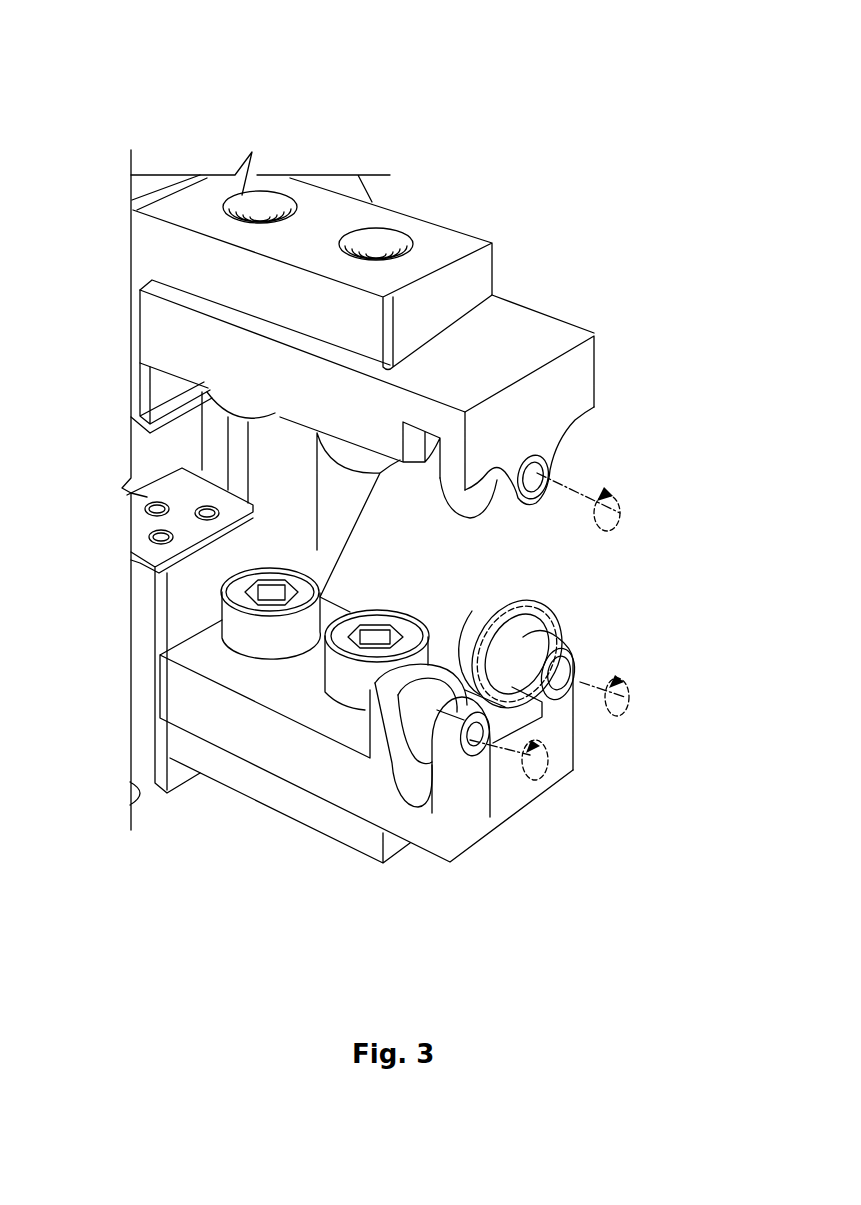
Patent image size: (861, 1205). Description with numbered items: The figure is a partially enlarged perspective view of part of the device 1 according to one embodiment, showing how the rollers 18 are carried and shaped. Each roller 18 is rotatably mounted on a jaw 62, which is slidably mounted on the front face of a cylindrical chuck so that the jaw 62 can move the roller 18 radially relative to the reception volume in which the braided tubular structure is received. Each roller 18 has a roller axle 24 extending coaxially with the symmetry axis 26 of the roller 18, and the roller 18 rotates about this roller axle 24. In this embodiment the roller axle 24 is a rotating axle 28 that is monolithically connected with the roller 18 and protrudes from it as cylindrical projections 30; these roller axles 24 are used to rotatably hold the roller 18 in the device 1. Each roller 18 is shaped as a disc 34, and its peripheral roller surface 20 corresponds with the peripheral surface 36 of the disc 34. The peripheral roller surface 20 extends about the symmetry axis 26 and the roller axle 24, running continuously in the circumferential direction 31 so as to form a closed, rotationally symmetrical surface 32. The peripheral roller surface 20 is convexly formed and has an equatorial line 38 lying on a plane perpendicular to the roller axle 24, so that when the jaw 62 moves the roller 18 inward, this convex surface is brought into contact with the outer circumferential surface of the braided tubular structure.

The device 1 is at (84, 54).
The jaw 62 is at (527, 335).
The roller 18 is at (451, 657).
The disc 34 is at (458, 510).
The peripheral roller surface 20 is at (350, 725).
The rotationally symmetrical surface 32 is at (350, 725).
The peripheral surface of the disc 36 is at (405, 737).
The roller axle 24 is at (594, 660).
The rotating axle 28 is at (594, 660).
The cylindrical projections 30 is at (543, 468).
The symmetry axis 26 is at (573, 490).
The circumferential direction 31 is at (617, 510).
The equatorial line 38 is at (523, 604).